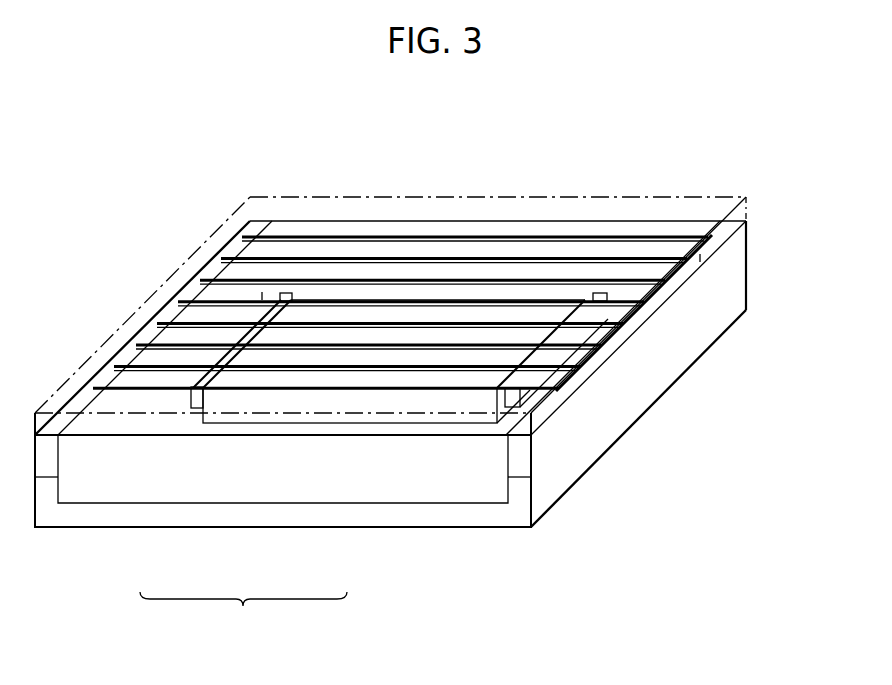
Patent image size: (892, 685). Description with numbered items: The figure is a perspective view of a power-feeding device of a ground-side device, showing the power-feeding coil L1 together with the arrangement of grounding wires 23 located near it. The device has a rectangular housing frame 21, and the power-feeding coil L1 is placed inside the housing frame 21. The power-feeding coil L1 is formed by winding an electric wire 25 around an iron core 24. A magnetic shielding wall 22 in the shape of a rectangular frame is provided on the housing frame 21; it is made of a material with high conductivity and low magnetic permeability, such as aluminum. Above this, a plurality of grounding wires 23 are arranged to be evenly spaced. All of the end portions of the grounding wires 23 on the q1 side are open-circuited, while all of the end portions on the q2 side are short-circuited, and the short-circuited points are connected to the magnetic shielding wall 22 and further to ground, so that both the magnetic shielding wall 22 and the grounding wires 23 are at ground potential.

The housing frame 21 is at (742, 298).
The magnetic shielding wall 22 is at (742, 247).
The grounding wires 23 is at (498, 262).
The iron core 24 is at (193, 402).
The electric wire 25 is at (338, 403).
The one end portion side q1 is at (262, 300).
The other end portion side q2 is at (700, 262).
The power-feeding coil L1 is at (243, 613).